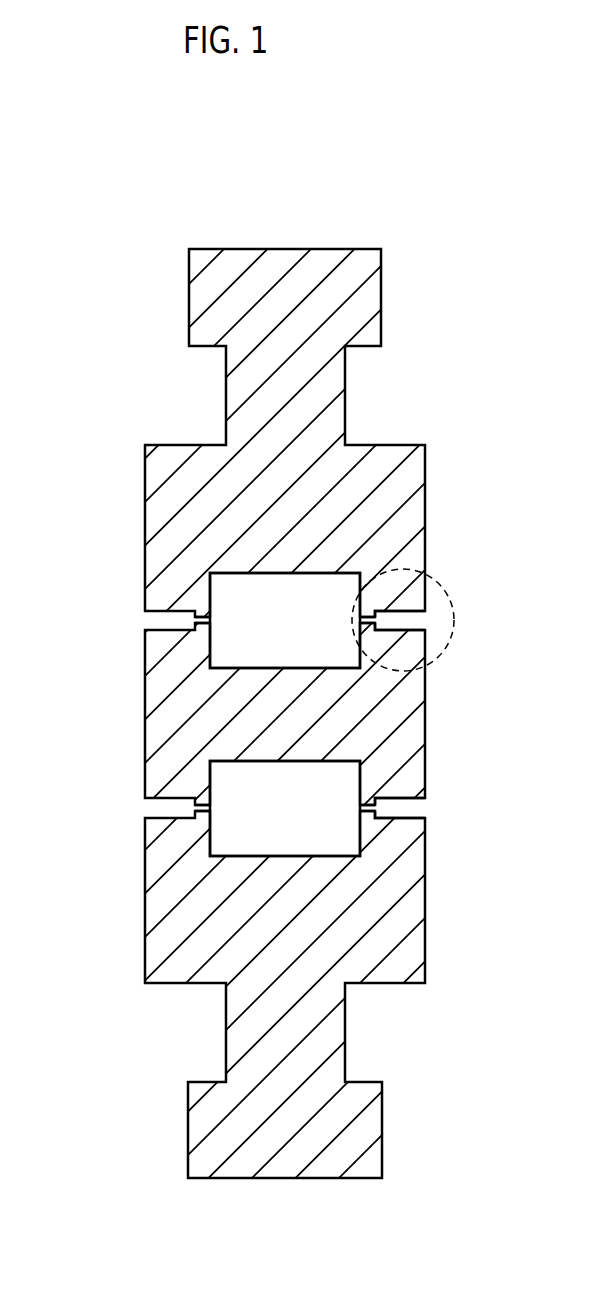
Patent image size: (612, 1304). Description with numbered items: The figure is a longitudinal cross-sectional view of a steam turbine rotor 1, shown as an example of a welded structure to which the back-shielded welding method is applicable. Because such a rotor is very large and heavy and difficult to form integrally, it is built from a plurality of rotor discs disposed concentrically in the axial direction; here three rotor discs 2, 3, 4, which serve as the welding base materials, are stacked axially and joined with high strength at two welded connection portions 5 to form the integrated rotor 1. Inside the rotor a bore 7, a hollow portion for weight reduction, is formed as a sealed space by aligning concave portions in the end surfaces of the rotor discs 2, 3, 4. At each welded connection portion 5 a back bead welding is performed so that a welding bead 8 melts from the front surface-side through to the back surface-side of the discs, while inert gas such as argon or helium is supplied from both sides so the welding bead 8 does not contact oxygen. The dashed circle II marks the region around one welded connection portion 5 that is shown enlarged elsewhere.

The steam turbine rotor 1 is at (48, 254).
The rotor disc 2 is at (145, 497).
The rotor disc 3 is at (145, 735).
The rotor disc 4 is at (145, 922).
The welded connection portion 5 is at (430, 618).
The bore 7 is at (319, 634).
The welding bead 8 is at (210, 618).
The detail region II is at (438, 582).